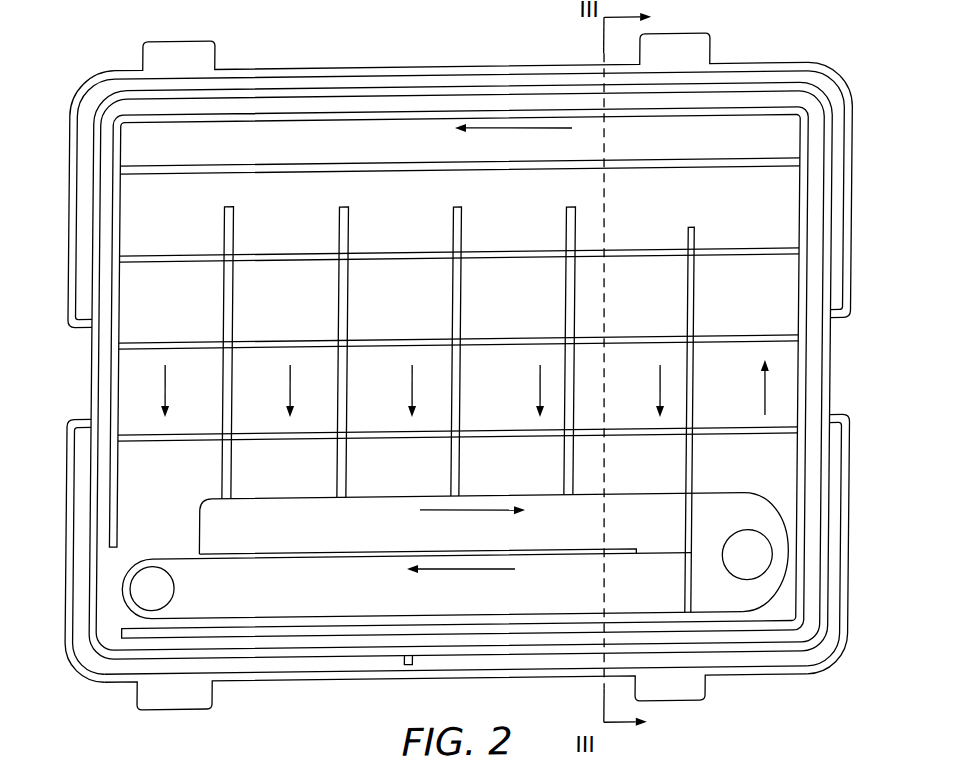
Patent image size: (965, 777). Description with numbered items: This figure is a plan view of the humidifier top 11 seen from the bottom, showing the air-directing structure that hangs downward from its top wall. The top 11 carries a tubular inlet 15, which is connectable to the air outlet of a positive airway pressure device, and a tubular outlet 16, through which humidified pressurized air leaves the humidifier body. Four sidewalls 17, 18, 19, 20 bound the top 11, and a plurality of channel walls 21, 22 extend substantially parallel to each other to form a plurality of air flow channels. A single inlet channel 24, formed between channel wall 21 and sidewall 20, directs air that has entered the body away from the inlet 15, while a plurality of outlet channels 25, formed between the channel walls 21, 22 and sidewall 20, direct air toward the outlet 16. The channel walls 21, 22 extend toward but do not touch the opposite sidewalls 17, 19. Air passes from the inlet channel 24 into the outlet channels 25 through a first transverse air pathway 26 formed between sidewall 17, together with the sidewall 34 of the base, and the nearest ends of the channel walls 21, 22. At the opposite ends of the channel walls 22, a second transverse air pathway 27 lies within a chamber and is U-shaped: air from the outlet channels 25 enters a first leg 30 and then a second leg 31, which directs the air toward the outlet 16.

The top 11 is at (878, 183).
The tubular inlet 15 is at (746, 533).
The tubular outlet 16 is at (148, 561).
The sidewall 17 is at (757, 90).
The sidewall 18 is at (825, 220).
The sidewall 19 is at (344, 652).
The sidewall 20 is at (96, 448).
The channel wall 21 is at (695, 303).
The channel wall 22 is at (233, 297).
The inlet channel 24 is at (748, 387).
The outlet channel 25 is at (394, 391).
The first transverse air pathway 26 is at (513, 140).
The second transverse air pathway 27 is at (466, 553).
The first leg 30 is at (361, 522).
The second leg 31 is at (317, 608).
The sidewall of the base 34 is at (138, 168).